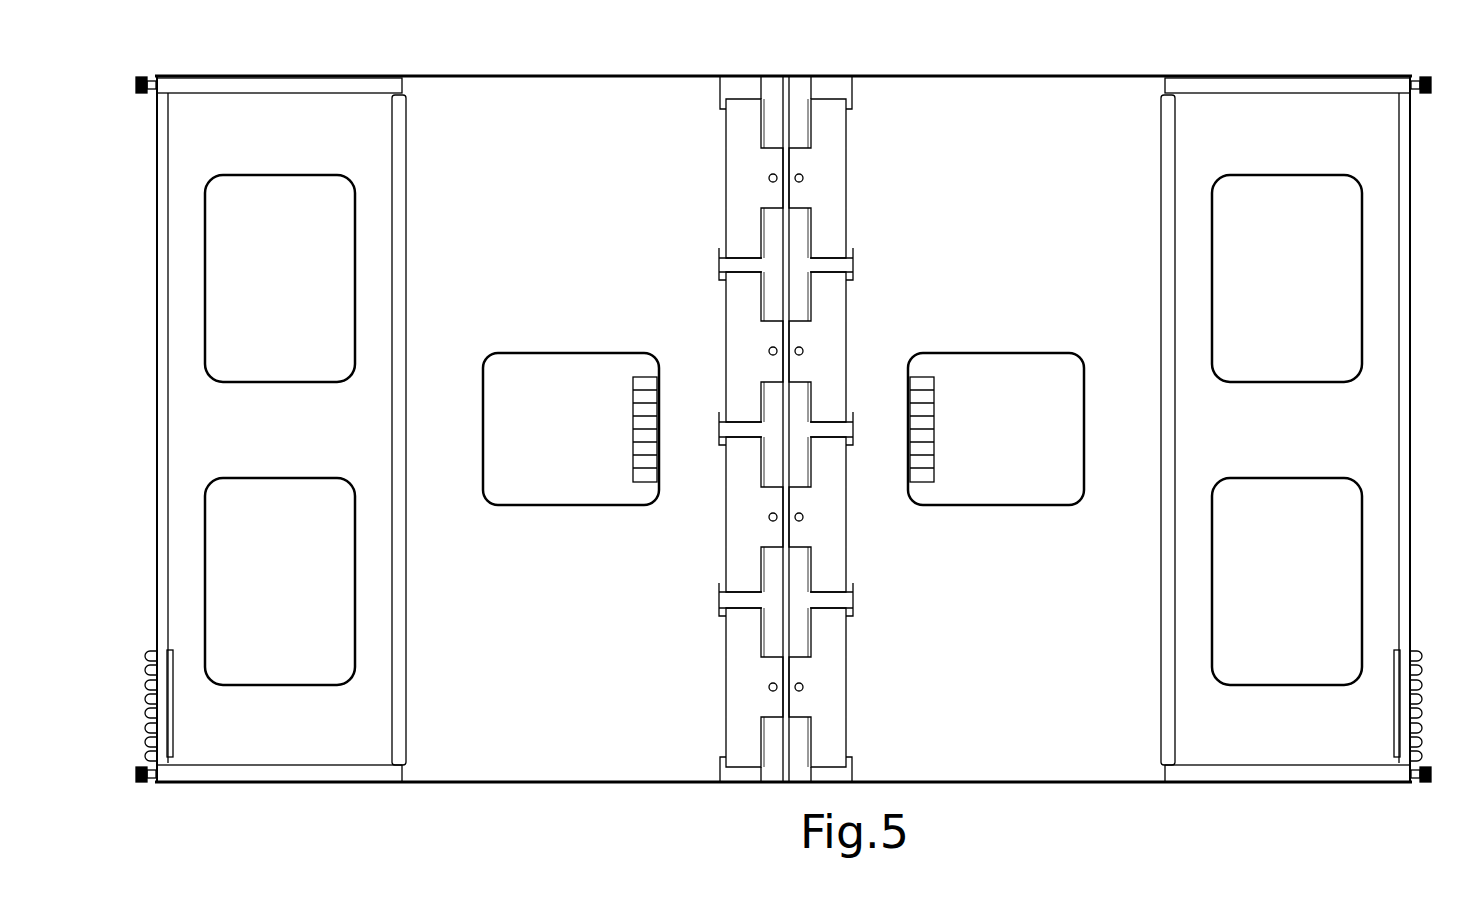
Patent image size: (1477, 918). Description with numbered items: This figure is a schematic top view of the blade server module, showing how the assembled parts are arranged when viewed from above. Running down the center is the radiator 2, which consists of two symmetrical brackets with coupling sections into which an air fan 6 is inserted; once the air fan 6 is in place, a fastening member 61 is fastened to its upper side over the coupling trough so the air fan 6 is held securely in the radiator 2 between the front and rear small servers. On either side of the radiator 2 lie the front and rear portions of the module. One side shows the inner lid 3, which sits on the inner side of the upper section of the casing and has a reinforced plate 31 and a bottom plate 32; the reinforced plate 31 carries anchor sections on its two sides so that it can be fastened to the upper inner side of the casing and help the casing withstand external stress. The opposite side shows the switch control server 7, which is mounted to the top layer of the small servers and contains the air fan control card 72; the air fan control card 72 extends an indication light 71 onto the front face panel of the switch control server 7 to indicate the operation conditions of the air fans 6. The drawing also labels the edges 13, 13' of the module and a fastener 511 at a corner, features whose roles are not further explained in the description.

The radiator 2 is at (778, 403).
The inner lid 3 is at (1184, 465).
The reinforced plate 31 is at (1227, 788).
The bottom plate 32 is at (1375, 444).
The fastening bolt 511 is at (142, 76).
The air fan 6 is at (726, 201).
The fastening member 61 is at (804, 178).
The switch control server 7 is at (397, 443).
The indication light 71 is at (148, 742).
The air fan control card 72 is at (567, 352).
The top edge 13 is at (783, 50).
The bottom edge 13' is at (783, 816).